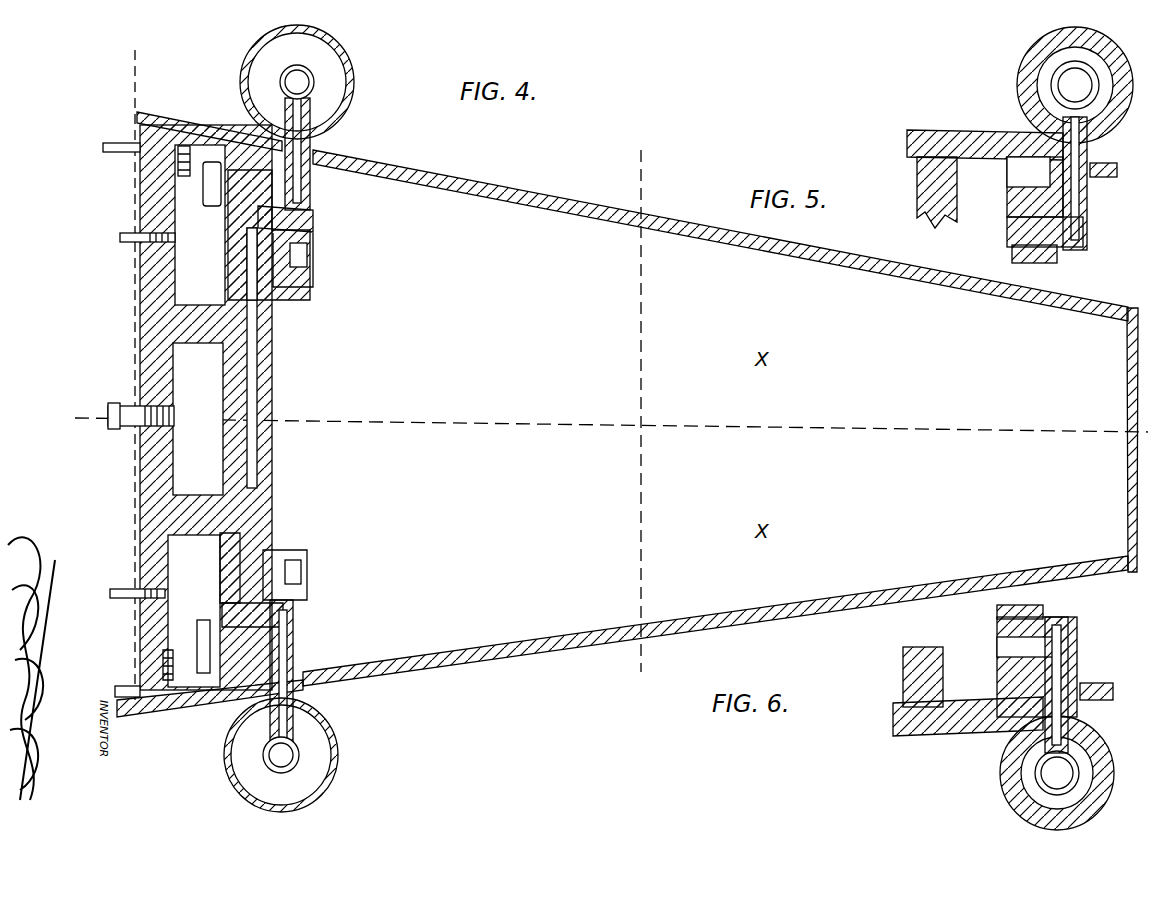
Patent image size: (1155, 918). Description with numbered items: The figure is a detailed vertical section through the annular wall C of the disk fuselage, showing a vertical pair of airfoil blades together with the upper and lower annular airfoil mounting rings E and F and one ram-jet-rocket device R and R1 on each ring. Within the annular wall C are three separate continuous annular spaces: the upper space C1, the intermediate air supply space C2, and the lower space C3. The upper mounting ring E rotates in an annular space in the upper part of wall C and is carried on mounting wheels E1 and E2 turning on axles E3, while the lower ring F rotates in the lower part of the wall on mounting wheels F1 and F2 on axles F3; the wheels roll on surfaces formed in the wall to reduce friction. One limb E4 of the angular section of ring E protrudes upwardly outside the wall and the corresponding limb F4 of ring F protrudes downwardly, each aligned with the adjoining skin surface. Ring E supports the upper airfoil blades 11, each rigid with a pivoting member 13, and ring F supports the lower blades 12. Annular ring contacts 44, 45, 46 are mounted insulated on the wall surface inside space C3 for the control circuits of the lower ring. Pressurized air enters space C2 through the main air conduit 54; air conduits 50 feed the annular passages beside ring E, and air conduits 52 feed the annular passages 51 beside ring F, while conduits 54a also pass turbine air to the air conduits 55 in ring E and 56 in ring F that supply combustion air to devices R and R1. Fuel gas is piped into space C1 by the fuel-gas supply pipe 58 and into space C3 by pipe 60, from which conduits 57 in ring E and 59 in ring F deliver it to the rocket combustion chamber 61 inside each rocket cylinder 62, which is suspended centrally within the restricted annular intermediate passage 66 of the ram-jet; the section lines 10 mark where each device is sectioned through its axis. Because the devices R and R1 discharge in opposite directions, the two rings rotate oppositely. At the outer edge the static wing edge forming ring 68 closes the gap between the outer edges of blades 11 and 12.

In FIG. 4, the section line 10— 10 is at (290, 40).
In FIG. 5, the section line 10— 10 is at (1068, 50).
In FIG. 4, the airfoil blades 11 is at (580, 220).
In FIG. 4, the airfoil blades 12 is at (500, 672).
In FIG. 4, the mounting axle or pivoting member 13 is at (635, 163).
In FIG. 4, the annular ring contact 44 is at (165, 680).
In FIG. 4, the annular ring contact 45 is at (170, 665).
In FIG. 4, the annular ring contact 46 is at (188, 650).
In FIG. 4, the air conduits 50 is at (175, 118).
In FIG. 4, the annular ports or passages 51 is at (240, 718).
In FIG. 4, the air conduits 52 is at (246, 487).
In FIG. 4, the main air conduit 54 is at (156, 426).
In FIG. 4, the air conduits 54a is at (135, 150).
In FIG. 4, the air conduits 55 is at (292, 210).
In FIG. 4, the air conduits 56 is at (290, 660).
In FIG. 5, the fuel conduits 57 is at (1030, 210).
In FIG. 4, the fuel-gas supply pipe 58 is at (118, 238).
In FIG. 6, the fuel conduits 59 is at (1057, 647).
In FIG. 4, the fuel gas supply pipe 60 is at (115, 590).
In FIG. 4, the rocket combustion chamber 61 is at (310, 72).
In FIG. 5, the rocket combustion chamber 61 is at (1095, 78).
In FIG. 6, the rocket combustion chamber 61 is at (1085, 808).
In FIG. 4, the rocket cylinder 62 is at (280, 84).
In FIG. 5, the rocket cylinder 62 is at (1075, 85).
In FIG. 6, the rocket cylinder 62 is at (1030, 800).
In FIG. 4, the restricted annular intermediate passage 66 is at (330, 108).
In FIG. 5, the restricted annular intermediate passage 66 is at (1028, 98).
In FIG. 6, the restricted annular intermediate passage 66 is at (1030, 760).
In FIG. 4, the static wing edge forming ring 68 is at (1128, 380).
In FIG. 4, the annular wall C is at (272, 408).
In FIG. 5, the annular wall C is at (915, 172).
In FIG. 6, the annular wall C is at (915, 685).
In FIG. 4, the upper annular space C1 is at (188, 277).
In FIG. 5, the upper annular space C1 is at (960, 165).
In FIG. 4, the air supply space C2 is at (185, 358).
In FIG. 4, the lower annular space C3 is at (190, 540).
In FIG. 6, the lower annular space C3 is at (905, 712).
In FIG. 4, the upper annular airfoil mounting ring E is at (320, 225).
In FIG. 5, the upper annular airfoil mounting ring E is at (1085, 232).
In FIG. 4, the mounting wheel E1 is at (212, 208).
In FIG. 4, the mounting wheel E2 is at (310, 270).
In FIG. 4, the axle E3 is at (205, 184).
In FIG. 4, the protruding limb section E4 is at (320, 150).
In FIG. 5, the protruding limb section E4 is at (1095, 140).
In FIG. 6, the protruding limb section E4 is at (1082, 700).
In FIG. 4, the lower annular airfoil mounting ring F is at (300, 625).
In FIG. 6, the lower annular airfoil mounting ring F is at (1075, 622).
In FIG. 4, the mounting wheel F1 is at (194, 622).
In FIG. 4, the mounting wheel F2 is at (285, 565).
In FIG. 4, the axle F3 is at (188, 610).
In FIG. 4, the protruding limb section F4 is at (300, 680).
In FIG. 4, the ram-jet-rocket device R is at (352, 76).
In FIG. 4, the ram-jet-rocket device R1 is at (335, 778).
In FIG. 5, the ram-jet-rocket device R1 is at (1020, 112).
In FIG. 6, the ram-jet-rocket device R1 is at (1020, 748).